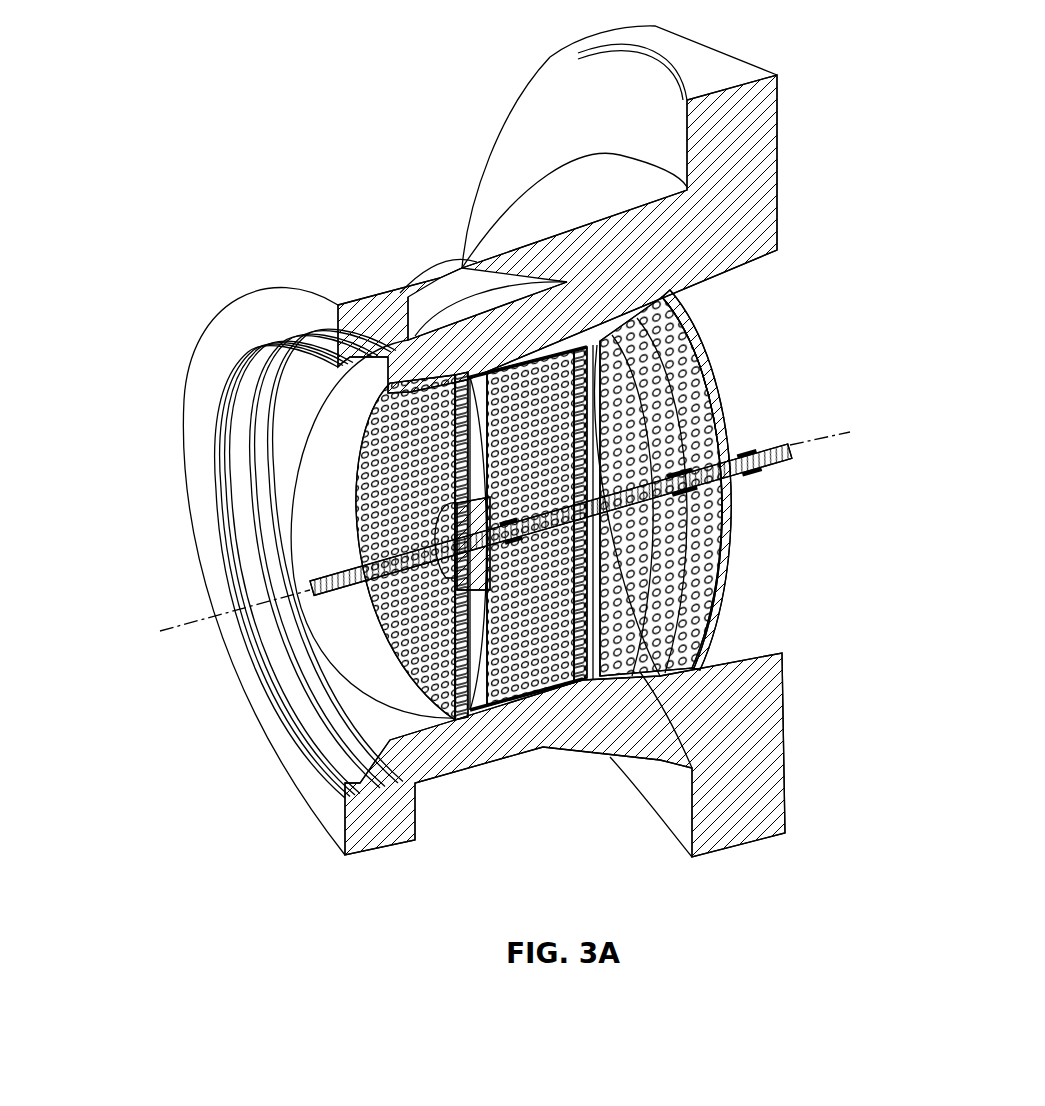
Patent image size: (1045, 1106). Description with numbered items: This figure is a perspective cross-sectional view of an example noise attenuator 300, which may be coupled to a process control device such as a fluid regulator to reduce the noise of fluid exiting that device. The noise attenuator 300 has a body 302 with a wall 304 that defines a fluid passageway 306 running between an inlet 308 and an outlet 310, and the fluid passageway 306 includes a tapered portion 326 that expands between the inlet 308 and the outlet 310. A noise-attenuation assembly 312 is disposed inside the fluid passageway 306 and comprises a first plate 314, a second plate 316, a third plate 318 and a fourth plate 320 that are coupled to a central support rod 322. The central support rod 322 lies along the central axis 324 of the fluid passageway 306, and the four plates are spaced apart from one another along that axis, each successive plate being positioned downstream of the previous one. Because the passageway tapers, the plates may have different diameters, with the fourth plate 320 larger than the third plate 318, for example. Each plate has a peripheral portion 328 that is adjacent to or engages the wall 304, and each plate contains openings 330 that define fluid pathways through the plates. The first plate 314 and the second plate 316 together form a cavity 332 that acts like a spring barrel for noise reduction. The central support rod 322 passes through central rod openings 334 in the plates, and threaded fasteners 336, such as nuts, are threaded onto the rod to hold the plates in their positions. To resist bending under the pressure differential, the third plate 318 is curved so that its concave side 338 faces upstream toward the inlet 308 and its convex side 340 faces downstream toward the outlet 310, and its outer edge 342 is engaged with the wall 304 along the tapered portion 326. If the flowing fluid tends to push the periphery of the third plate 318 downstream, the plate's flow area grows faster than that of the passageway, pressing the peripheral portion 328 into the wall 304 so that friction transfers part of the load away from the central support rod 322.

The noise attenuator 300 is at (243, 113).
The body 302 is at (300, 284).
The wall 304 is at (393, 710).
The fluid passageway 306 is at (313, 430).
The inlet 308 is at (323, 707).
The outlet 310 is at (805, 322).
The noise-attenuation assembly 312 is at (782, 527).
The first plate 314 is at (470, 378).
The second plate 316 is at (500, 360).
The third plate 318 is at (605, 350).
The fourth plate 320 is at (672, 300).
The central support rod 322 is at (768, 445).
The central axis 324 is at (168, 627).
The tapered portion 326 is at (680, 672).
The peripheral portion 328 is at (400, 645).
The openings 330 is at (378, 484).
The cavity 332 is at (484, 684).
The central rod openings 334 is at (733, 480).
The threaded fasteners 336 is at (690, 338).
The concave side 338 is at (650, 690).
The convex side 340 is at (728, 583).
The outer edge 342 is at (628, 660).